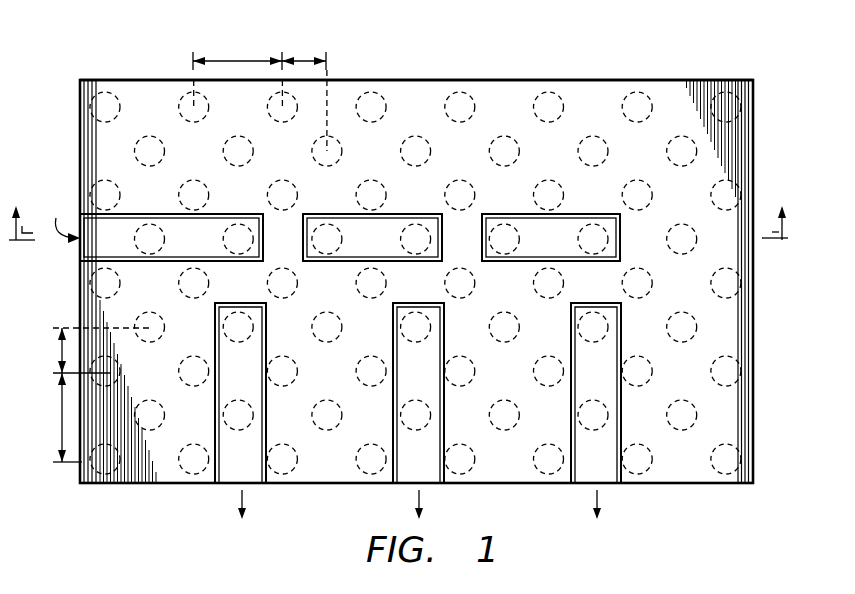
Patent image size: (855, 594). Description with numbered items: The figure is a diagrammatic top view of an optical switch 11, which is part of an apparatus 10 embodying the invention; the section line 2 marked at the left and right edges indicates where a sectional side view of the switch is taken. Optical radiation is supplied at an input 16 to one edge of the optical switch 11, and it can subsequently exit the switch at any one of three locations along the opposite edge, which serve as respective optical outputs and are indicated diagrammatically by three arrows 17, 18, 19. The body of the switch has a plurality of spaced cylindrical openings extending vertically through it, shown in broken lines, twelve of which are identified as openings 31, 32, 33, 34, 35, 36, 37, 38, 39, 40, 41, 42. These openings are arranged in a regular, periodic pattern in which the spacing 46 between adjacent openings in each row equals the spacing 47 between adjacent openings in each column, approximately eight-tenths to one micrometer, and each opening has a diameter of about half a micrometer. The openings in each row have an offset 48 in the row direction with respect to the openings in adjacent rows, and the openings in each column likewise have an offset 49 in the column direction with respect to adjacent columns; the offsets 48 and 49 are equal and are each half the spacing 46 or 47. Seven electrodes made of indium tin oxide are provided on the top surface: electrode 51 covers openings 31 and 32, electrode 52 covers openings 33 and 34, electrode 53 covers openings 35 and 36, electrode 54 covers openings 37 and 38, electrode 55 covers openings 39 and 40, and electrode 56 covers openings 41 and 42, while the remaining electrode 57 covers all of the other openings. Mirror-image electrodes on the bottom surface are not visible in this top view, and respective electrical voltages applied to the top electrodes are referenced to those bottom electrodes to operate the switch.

The apparatus 10 is at (631, 44).
The optical switch 11 is at (760, 399).
The optical input 16 is at (57, 217).
The optical output arrow 17 is at (241, 504).
The optical output arrow 18 is at (418, 504).
The optical output arrow 19 is at (599, 498).
The opening 31 is at (150, 228).
The opening 32 is at (238, 228).
The opening 33 is at (327, 228).
The opening 34 is at (416, 228).
The opening 35 is at (504, 228).
The opening 36 is at (593, 228).
The opening 37 is at (238, 342).
The opening 38 is at (238, 430).
The opening 39 is at (416, 342).
The opening 40 is at (416, 430).
The opening 41 is at (593, 342).
The opening 42 is at (593, 430).
The spacing 46 is at (242, 61).
The spacing 47 is at (59, 414).
The offset 48 is at (302, 61).
The offset 49 is at (59, 352).
The electrode 51 is at (129, 261).
The electrode 52 is at (352, 261).
The electrode 53 is at (528, 261).
The electrode 54 is at (266, 395).
The electrode 55 is at (444, 395).
The electrode 56 is at (621, 395).
The electrode 57 is at (500, 88).
The section line 2 is at (399, 207).